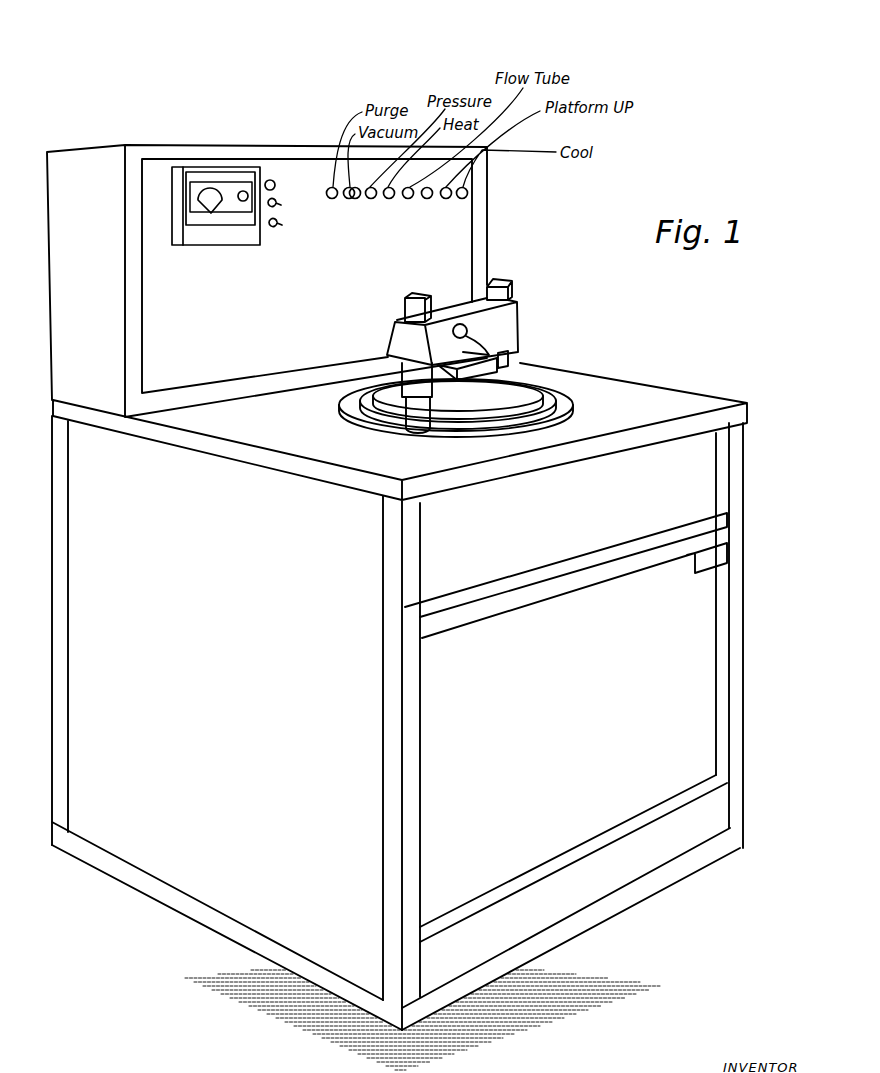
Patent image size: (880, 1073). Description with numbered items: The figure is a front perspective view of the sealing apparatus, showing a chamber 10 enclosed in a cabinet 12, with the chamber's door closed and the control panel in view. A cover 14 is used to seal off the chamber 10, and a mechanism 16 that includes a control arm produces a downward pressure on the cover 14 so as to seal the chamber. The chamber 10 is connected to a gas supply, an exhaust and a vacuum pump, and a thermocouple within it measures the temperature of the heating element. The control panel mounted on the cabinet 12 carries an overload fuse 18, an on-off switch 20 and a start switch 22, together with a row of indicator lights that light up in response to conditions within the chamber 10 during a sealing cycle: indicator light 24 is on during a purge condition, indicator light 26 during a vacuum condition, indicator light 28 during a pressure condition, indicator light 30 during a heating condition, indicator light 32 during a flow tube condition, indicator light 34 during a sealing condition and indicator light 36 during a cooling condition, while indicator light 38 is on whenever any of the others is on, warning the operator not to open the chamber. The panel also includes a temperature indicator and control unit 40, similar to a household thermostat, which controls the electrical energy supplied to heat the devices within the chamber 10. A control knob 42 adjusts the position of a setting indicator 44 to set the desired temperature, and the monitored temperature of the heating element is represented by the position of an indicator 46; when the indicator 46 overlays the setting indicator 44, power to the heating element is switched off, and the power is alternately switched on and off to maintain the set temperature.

The chamber 10 is at (567, 407).
The cabinet 12 is at (238, 640).
The cover 14 is at (520, 401).
The mechanism 16 is at (510, 325).
The overload fuse 18 is at (273, 183).
The on-off switch 20 is at (278, 198).
The start switch 22 is at (275, 226).
The indicator light 24 is at (332, 198).
The indicator light 26 is at (350, 198).
The indicator light 28 is at (367, 198).
The indicator light 30 is at (386, 199).
The indicator light 32 is at (405, 198).
The indicator light 34 is at (425, 199).
The indicator light 36 is at (444, 199).
The indicator light 38 is at (461, 199).
The temperature indicator and control unit 40 is at (213, 238).
The control knob 42 is at (245, 190).
The setting indicator 44 is at (228, 194).
The indicator 46 is at (202, 196).